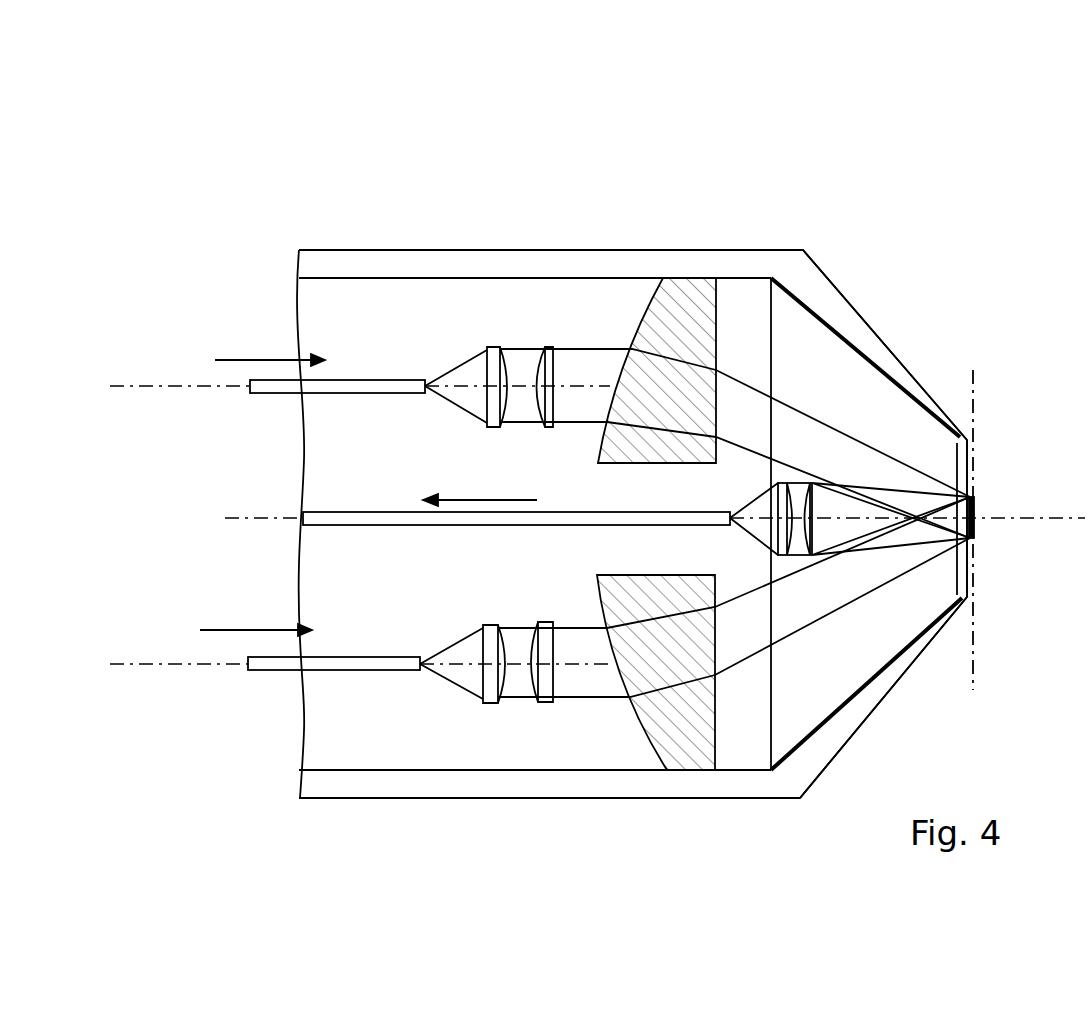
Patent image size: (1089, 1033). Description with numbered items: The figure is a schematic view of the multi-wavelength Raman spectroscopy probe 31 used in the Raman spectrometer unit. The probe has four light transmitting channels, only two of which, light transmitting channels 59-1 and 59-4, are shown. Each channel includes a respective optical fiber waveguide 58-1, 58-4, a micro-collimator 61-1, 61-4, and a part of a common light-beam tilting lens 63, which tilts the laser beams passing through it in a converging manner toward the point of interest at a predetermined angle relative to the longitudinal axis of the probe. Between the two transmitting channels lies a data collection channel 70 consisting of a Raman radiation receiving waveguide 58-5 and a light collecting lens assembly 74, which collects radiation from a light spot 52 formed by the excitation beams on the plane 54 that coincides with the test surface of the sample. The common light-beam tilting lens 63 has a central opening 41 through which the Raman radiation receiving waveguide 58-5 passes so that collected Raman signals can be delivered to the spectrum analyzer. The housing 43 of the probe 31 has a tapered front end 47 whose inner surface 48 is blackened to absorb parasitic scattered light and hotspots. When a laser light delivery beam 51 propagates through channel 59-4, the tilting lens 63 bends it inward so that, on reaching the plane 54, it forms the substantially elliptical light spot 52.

The multi-wavelength Raman spectroscopy probe 31 is at (940, 176).
The housing 43 is at (490, 250).
The tapered front end 47 is at (837, 288).
The inner surface 48 is at (868, 368).
The laser light delivery beam 51 is at (745, 395).
The common light-beam tilting lens 63 is at (693, 283).
The central opening 41 is at (618, 483).
The light spot 52 is at (975, 520).
The plane 54 is at (975, 400).
The optical fiber waveguide 58-4 is at (393, 380).
The Raman radiation receiving waveguide 58-5 is at (520, 542).
The optical fiber waveguide 58-1 is at (357, 672).
The micro-collimator 61-4 is at (480, 345).
The light transmitting channel 59-4 is at (520, 315).
The micro-collimator 61-1 is at (485, 718).
The light transmitting channel 59-1 is at (522, 730).
The data collection channel 70 is at (412, 479).
The light collecting lens assembly 74 is at (822, 478).